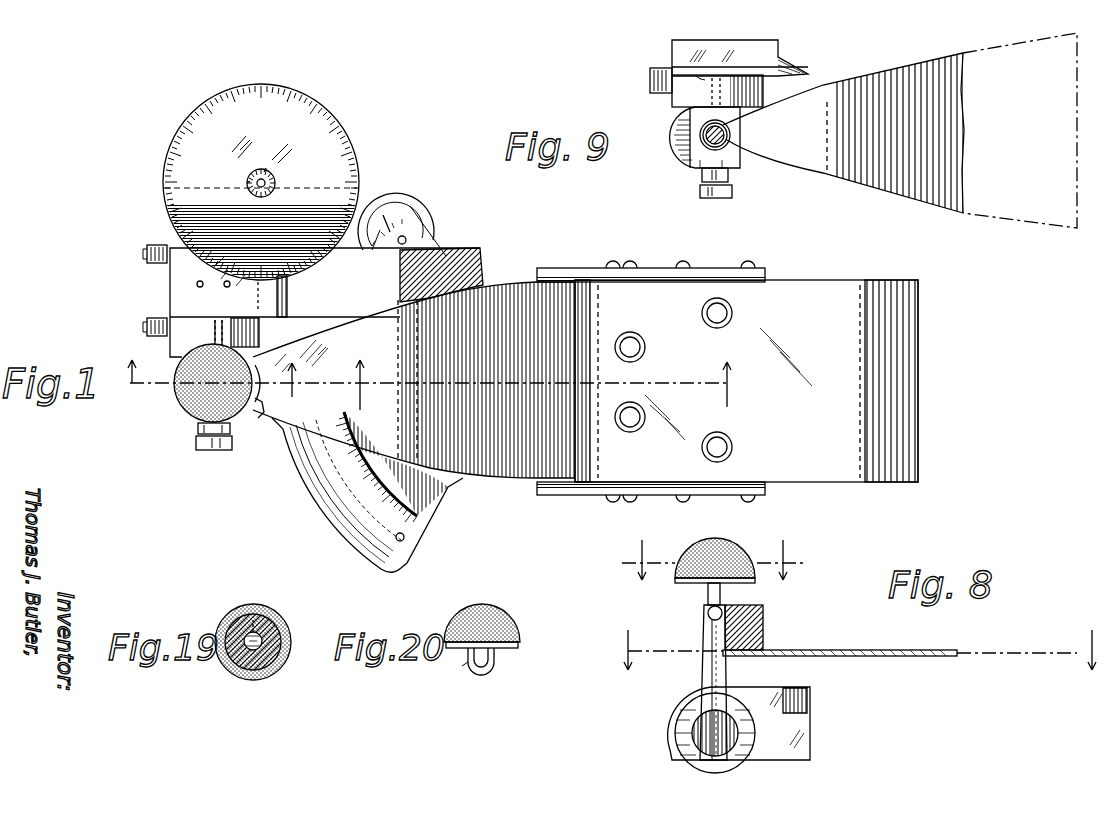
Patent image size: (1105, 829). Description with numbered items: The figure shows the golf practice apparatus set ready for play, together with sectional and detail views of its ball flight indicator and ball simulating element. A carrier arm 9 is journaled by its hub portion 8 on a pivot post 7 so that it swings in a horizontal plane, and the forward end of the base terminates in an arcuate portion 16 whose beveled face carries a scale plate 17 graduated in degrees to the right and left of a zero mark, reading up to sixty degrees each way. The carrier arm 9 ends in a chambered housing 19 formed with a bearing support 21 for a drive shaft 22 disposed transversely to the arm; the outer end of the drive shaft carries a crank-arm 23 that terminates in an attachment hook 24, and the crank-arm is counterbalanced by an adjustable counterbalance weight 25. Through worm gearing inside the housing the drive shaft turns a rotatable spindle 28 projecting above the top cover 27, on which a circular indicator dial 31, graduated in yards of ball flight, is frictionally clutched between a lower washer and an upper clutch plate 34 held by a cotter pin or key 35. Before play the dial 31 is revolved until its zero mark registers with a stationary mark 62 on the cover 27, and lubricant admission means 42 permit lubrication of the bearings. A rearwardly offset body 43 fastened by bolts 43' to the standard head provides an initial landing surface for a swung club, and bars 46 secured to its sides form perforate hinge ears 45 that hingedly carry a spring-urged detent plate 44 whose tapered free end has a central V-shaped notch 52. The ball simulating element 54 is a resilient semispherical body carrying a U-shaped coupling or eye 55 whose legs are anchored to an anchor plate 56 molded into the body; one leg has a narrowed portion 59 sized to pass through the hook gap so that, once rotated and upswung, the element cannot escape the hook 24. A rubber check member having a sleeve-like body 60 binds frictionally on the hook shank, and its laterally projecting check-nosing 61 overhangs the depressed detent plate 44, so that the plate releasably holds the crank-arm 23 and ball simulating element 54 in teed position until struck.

In FIG. 1, the scaled indicator dial 31 is at (308, 99).
In FIG. 1, the cotter pin or key 35 is at (266, 168).
In FIG. 1, the upper clutch plate or washer 34 is at (248, 184).
In FIG. 1, the rotatable spindle 28 is at (277, 185).
In FIG. 1, the scale plate 17 is at (382, 212).
In FIG. 1, the arcuate portion 16 is at (402, 206).
In FIG. 1, the carrier arm 9 is at (420, 270).
In FIG. 8, the carrier arm 9 is at (859, 665).
In FIG. 1, the lubricant admission means 42 is at (147, 252).
In FIG. 9, the lubricant admission means 42 is at (650, 78).
In FIG. 1, the top cover 27 is at (170, 284).
In FIG. 1, the stationary mark 62 is at (265, 303).
In FIG. 1, the hub portion 8 is at (216, 373).
In FIG. 1, the pivot post 7 is at (548, 380).
In FIG. 1, the bearing support 21 is at (200, 345).
In FIG. 9, the bearing support 21 is at (672, 98).
In FIG. 1, the ball simulating element 54 is at (190, 405).
In FIG. 8, the ball simulating element 54 is at (725, 560).
In FIG. 19, the ball simulating element 54 is at (226, 668).
In FIG. 20, the ball simulating element 54 is at (505, 616).
In FIG. 1, the check-nosing 61 is at (260, 418).
In FIG. 8, the check-nosing 61 is at (762, 652).
In FIG. 1, the detent plate 44 is at (300, 430).
In FIG. 9, the detent plate 44 is at (836, 178).
In FIG. 8, the detent plate 44 is at (843, 650).
In FIG. 1, the hinge ears 45 is at (537, 268).
In FIG. 1, the bars 46 is at (703, 268).
In FIG. 1, the body 43 is at (746, 368).
In FIG. 1, the bolts 43' is at (673, 380).
In FIG. 9, the chambered housing 19 is at (672, 52).
In FIG. 8, the chambered housing 19 is at (764, 700).
In FIG. 9, the drive shaft 22 is at (700, 118).
In FIG. 8, the drive shaft 22 is at (680, 735).
In FIG. 9, the counterbalance weight 25 is at (700, 140).
In FIG. 9, the crank-arm 23 is at (700, 160).
In FIG. 8, the crank-arm 23 is at (706, 710).
In FIG. 9, the V-shaped notch 52 is at (735, 137).
In FIG. 8, the attachment hook 24 is at (708, 612).
In FIG. 8, the U-shaped coupling or eye 55 is at (720, 592).
In FIG. 19, the U-shaped coupling or eye 55 is at (258, 606).
In FIG. 20, the U-shaped coupling or eye 55 is at (497, 660).
In FIG. 8, the sleeve-like body 60 is at (703, 632).
In FIG. 19, the anchor plate 56 is at (284, 640).
In FIG. 20, the narrowed portion 59 is at (468, 668).